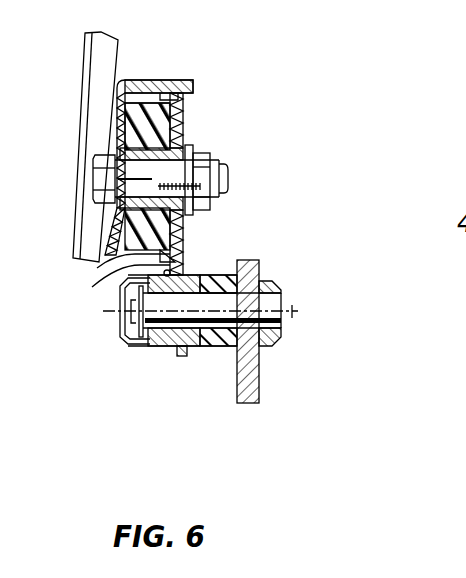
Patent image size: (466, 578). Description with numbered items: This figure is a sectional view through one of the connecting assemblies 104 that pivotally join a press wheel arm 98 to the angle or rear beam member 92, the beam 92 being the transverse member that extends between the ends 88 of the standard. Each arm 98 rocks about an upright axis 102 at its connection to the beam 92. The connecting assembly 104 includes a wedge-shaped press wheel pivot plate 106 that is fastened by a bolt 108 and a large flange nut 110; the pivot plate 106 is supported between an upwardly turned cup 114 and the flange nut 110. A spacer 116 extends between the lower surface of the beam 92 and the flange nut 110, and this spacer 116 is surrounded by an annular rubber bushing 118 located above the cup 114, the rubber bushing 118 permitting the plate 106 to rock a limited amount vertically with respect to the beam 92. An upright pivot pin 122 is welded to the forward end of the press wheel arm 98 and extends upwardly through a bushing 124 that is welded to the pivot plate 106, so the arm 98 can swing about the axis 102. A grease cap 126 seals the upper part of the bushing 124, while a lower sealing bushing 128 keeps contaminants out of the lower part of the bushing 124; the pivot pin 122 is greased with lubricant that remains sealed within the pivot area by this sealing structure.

The ends of the standard 88 is at (83, 262).
The angle or rear beam member 92 is at (132, 78).
The arm 98 is at (259, 377).
The upright axis 102 is at (292, 311).
The connecting assembly 104 is at (92, 361).
The press wheel pivot plate 106 is at (183, 107).
The bolt 108 is at (93, 176).
The large flange nut 110 is at (203, 153).
The upwardly turned cup 114 is at (133, 258).
The spacer 116 is at (157, 83).
The annular rubber bushing 118 is at (108, 257).
The upright pivot pin 122 is at (281, 318).
The bushing 124 is at (163, 350).
The grease cap 126 is at (123, 342).
The lower sealing bushing 128 is at (213, 347).